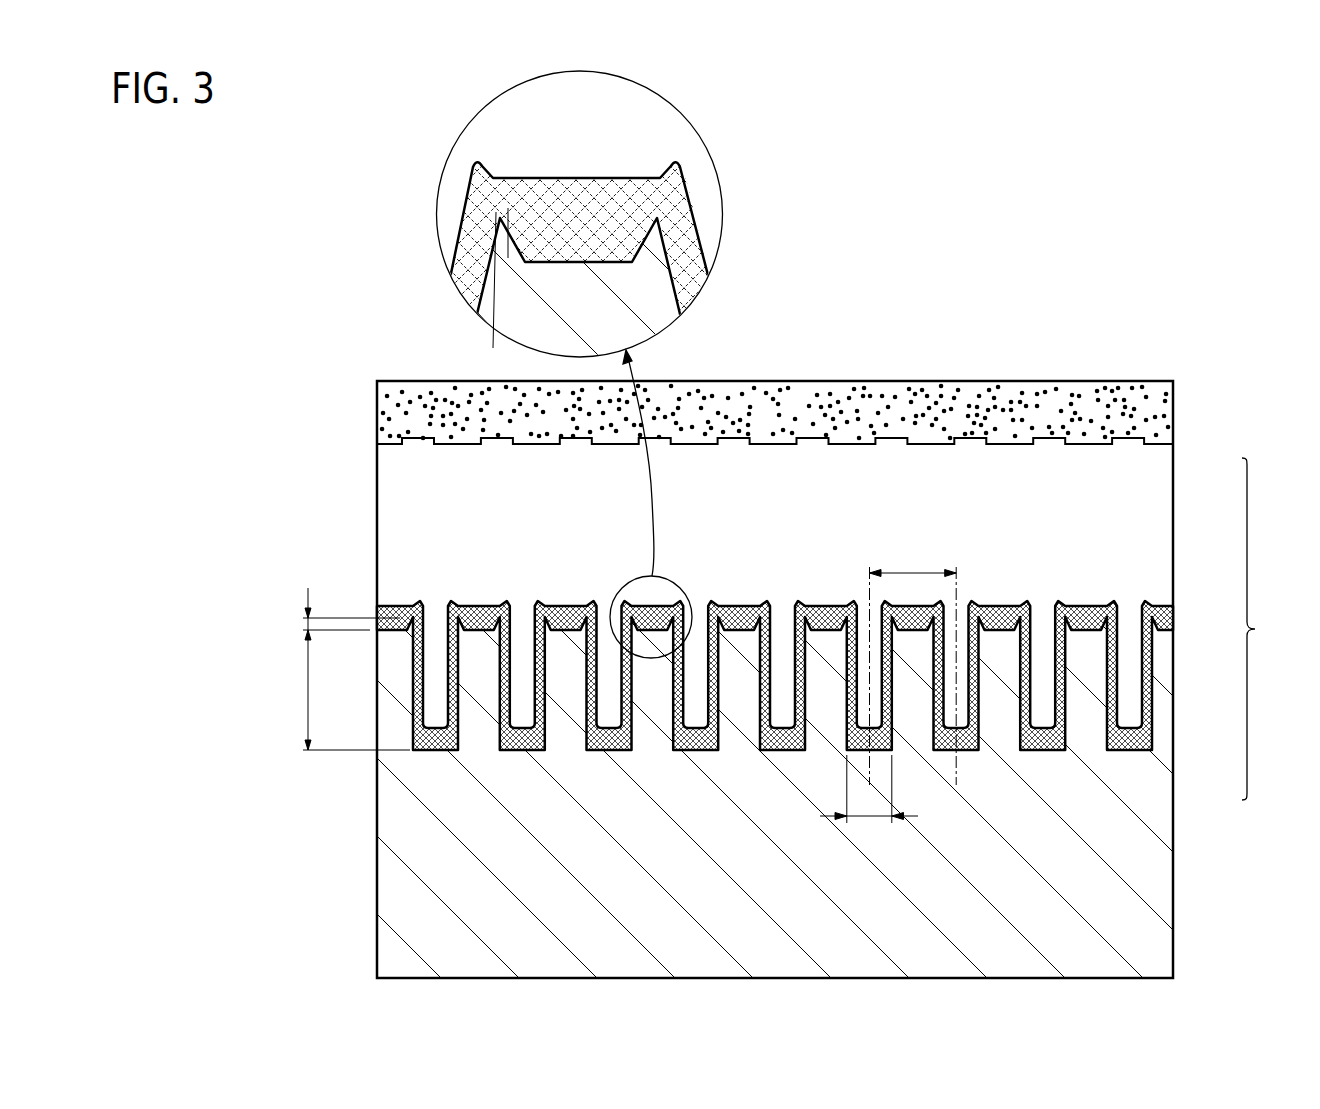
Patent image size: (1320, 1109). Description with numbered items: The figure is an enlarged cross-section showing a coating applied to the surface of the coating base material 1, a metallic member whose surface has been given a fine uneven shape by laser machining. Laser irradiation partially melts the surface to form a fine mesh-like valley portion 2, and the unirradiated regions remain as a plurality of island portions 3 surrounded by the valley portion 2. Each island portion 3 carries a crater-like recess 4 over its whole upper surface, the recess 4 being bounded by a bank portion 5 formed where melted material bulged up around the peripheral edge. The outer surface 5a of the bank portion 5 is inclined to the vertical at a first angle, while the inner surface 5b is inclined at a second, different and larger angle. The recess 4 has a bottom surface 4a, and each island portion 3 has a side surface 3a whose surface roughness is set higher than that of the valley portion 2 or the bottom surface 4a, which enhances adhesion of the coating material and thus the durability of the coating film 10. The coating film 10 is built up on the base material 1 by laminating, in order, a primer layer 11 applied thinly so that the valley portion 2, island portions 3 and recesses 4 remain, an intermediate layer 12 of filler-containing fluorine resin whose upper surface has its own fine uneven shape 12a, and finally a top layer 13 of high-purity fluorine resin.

The coating base material 1 is at (377, 912).
The valley portion 2 is at (412, 731).
The island portion 3 is at (396, 703).
The side surface of island portion 3a is at (424, 652).
The recess 4 is at (394, 627).
The bottom surface of recess 4a is at (612, 258).
The bank portion 5 is at (414, 618).
The outer surface of bank portion 5a is at (488, 250).
The inner surface of bank portion 5b is at (523, 250).
The coating film 10 is at (1267, 629).
The primer layer 11 is at (1055, 750).
The intermediate layer 12 is at (1153, 572).
The fine uneven shape 12a is at (803, 438).
The top layer 13 is at (1130, 433).